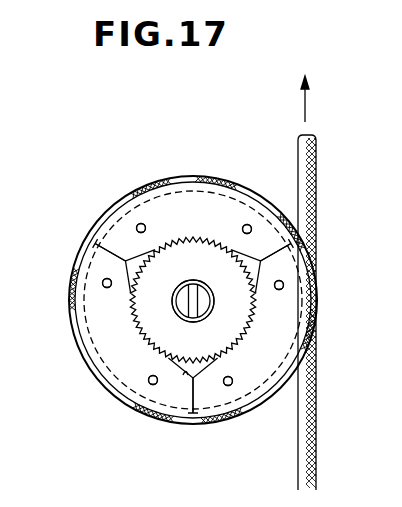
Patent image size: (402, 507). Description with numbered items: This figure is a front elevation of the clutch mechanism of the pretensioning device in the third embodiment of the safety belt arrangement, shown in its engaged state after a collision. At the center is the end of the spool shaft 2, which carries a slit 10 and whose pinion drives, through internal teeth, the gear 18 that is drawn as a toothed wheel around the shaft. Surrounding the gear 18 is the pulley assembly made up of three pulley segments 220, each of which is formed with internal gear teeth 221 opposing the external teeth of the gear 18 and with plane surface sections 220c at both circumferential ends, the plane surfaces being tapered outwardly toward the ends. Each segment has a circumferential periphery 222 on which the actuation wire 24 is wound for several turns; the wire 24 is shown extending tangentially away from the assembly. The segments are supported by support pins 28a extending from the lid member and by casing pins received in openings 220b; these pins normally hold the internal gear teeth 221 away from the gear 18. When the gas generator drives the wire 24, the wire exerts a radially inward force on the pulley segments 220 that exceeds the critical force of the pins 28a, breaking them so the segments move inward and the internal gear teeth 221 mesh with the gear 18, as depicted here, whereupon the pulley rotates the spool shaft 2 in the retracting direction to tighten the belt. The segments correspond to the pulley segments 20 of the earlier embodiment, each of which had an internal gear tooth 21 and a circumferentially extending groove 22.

The spool shaft 2 is at (177, 307).
The slit 10 is at (202, 310).
The gear 18 is at (172, 245).
The pulley segment 20 is at (287, 313).
The internal gear tooth 21 is at (198, 281).
The circumferentially extending groove 22 is at (110, 213).
The actuation wire 24 is at (316, 165).
The support pin 28a is at (141, 224).
The pulley segment 220 is at (98, 314).
The opening 220b is at (138, 225).
The plane surface section 220c is at (290, 243).
The internal gear teeth 221 is at (165, 338).
The circumferential periphery 222 is at (305, 352).